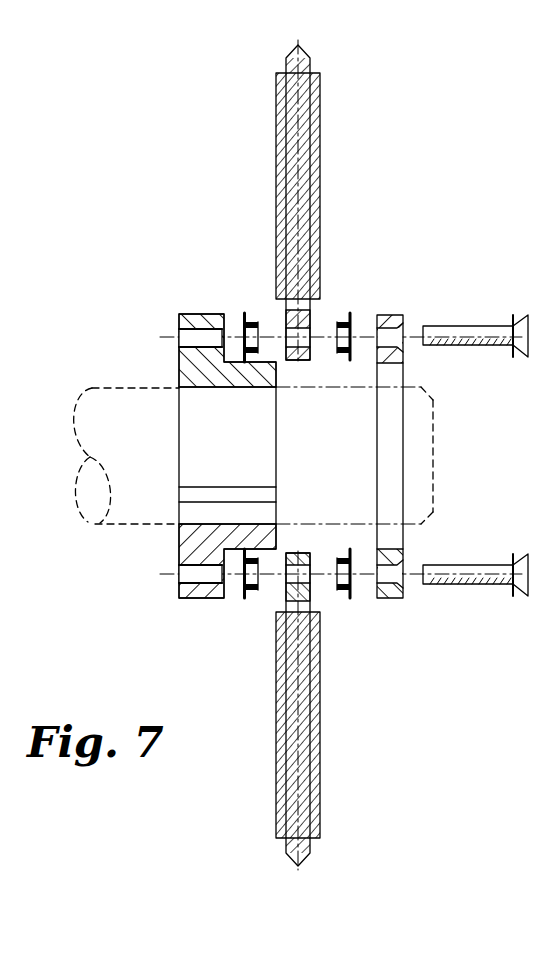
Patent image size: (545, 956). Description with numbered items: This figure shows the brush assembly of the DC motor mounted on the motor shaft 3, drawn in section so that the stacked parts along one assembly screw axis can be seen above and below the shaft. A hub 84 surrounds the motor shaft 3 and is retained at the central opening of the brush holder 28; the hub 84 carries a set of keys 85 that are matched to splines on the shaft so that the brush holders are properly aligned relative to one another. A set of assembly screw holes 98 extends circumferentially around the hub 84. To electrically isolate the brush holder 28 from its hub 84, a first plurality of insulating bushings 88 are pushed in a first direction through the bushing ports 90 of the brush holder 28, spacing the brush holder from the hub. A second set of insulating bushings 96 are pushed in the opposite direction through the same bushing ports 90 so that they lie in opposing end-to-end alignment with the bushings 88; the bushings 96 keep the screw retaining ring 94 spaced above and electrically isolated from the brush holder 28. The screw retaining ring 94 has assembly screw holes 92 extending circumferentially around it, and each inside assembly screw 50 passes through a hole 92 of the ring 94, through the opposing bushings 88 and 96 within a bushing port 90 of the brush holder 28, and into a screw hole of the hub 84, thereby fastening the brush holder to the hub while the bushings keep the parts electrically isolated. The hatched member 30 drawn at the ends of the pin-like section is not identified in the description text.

The motor shaft 3 is at (433, 428).
The brush holder 28 is at (301, 52).
The arm block 30 is at (313, 157).
The inside assembly screws 50 is at (468, 326).
The hub 84 is at (178, 364).
The keys 85 is at (186, 494).
The insulating bushings 88 is at (245, 324).
The bushing ports 90 is at (307, 320).
The assembly screw holes 92 is at (392, 318).
The screw retaining ring 94 is at (400, 372).
The insulating bushings 96 is at (350, 314).
The assembly screw holes 98 is at (180, 334).